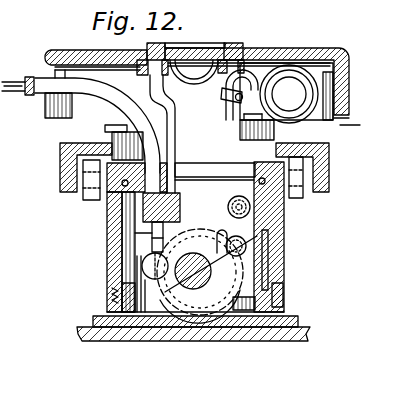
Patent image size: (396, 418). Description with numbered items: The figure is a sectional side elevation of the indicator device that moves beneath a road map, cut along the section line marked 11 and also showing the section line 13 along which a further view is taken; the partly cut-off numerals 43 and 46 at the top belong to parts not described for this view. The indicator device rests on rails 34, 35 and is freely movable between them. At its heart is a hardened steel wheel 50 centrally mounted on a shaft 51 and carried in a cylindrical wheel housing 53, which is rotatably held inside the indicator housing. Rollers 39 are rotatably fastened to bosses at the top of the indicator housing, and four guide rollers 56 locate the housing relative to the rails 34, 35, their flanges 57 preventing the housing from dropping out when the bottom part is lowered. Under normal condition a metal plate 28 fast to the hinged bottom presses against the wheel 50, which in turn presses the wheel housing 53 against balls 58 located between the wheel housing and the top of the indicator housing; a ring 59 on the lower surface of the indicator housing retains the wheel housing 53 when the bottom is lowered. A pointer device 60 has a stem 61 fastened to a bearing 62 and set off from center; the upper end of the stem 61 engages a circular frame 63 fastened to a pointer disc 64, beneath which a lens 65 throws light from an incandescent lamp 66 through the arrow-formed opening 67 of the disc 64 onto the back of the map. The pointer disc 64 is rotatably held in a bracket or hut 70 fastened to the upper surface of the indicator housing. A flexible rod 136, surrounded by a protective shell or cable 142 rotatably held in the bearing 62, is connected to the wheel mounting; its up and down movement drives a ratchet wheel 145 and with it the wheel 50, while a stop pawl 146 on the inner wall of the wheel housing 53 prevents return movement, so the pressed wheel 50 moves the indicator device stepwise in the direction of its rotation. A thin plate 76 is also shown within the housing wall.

The section line 11— 11 is at (62, 122).
The section line 13— 13 is at (100, 235).
The metal plate 28 is at (94, 318).
The rail 34 is at (329, 188).
The rail 35 is at (62, 188).
The rollers 39 is at (91, 200).
The hopper part 43 is at (11, 4).
The hopper part 46 is at (59, 4).
The hardened steel wheel 50 is at (229, 318).
The shaft 51 is at (182, 300).
The cylindrical wheel housing 53 is at (123, 275).
The guide rollers 56 is at (274, 137).
The flanges 57 is at (106, 129).
The balls 58 is at (260, 182).
The ring 59 is at (283, 300).
The pointer device 60 is at (182, 119).
The stem 61 is at (176, 143).
The bearing 62 is at (177, 215).
The circular frame 63 is at (224, 74).
The pointer disc 64 is at (236, 43).
The lens 65 is at (193, 83).
The incandescent lamp 66 is at (298, 72).
The arrow-formed opening 67 is at (187, 44).
The bracket or hut 70 is at (348, 80).
The spring plate 76 is at (269, 252).
The flexible rod 136 is at (111, 245).
The protective shell or cable 142 is at (34, 82).
The ratchet wheel 145 is at (199, 308).
The stop pawl 146 is at (262, 223).